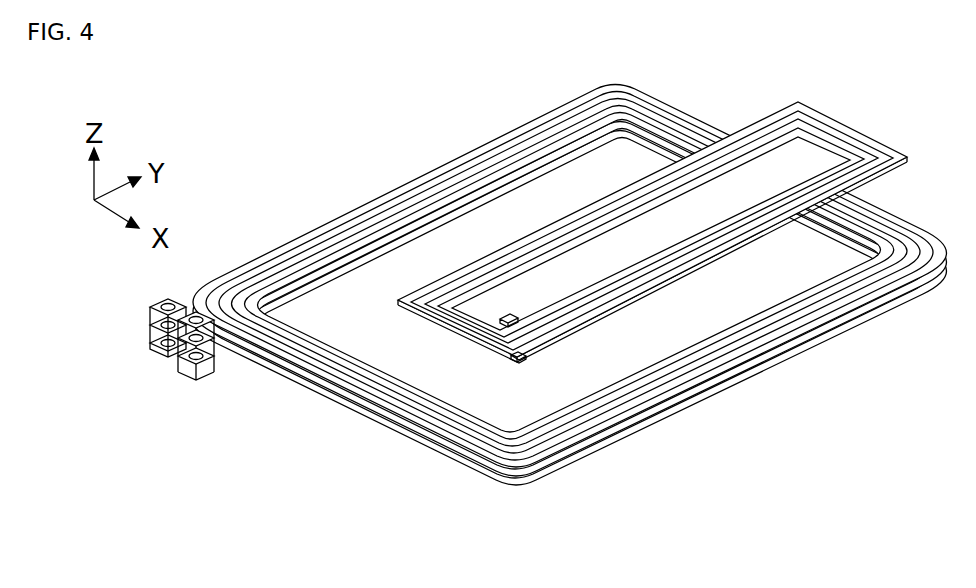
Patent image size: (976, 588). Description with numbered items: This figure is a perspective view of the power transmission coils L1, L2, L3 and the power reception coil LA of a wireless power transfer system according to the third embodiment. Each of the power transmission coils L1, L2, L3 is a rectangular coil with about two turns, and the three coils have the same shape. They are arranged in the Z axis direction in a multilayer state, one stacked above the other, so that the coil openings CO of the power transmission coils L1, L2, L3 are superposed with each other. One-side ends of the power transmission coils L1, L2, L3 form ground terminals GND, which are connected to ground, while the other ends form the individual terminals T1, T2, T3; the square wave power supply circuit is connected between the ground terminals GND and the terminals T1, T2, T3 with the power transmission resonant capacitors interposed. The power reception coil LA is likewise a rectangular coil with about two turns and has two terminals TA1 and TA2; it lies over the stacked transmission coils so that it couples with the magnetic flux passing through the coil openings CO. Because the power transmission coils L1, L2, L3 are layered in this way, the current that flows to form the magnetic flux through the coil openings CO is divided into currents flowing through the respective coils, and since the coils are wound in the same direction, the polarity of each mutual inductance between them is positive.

The coil opening CO is at (570, 331).
The power transmission coil L1 is at (571, 433).
The power transmission coil L2 is at (551, 447).
The power transmission coil L3 is at (541, 472).
The power reception coil LA is at (652, 224).
The terminal TA1 is at (519, 361).
The terminal TA2 is at (507, 323).
The ground terminal GND is at (153, 355).
The terminal T1 is at (223, 347).
The terminal T2 is at (205, 358).
The terminal T3 is at (193, 372).